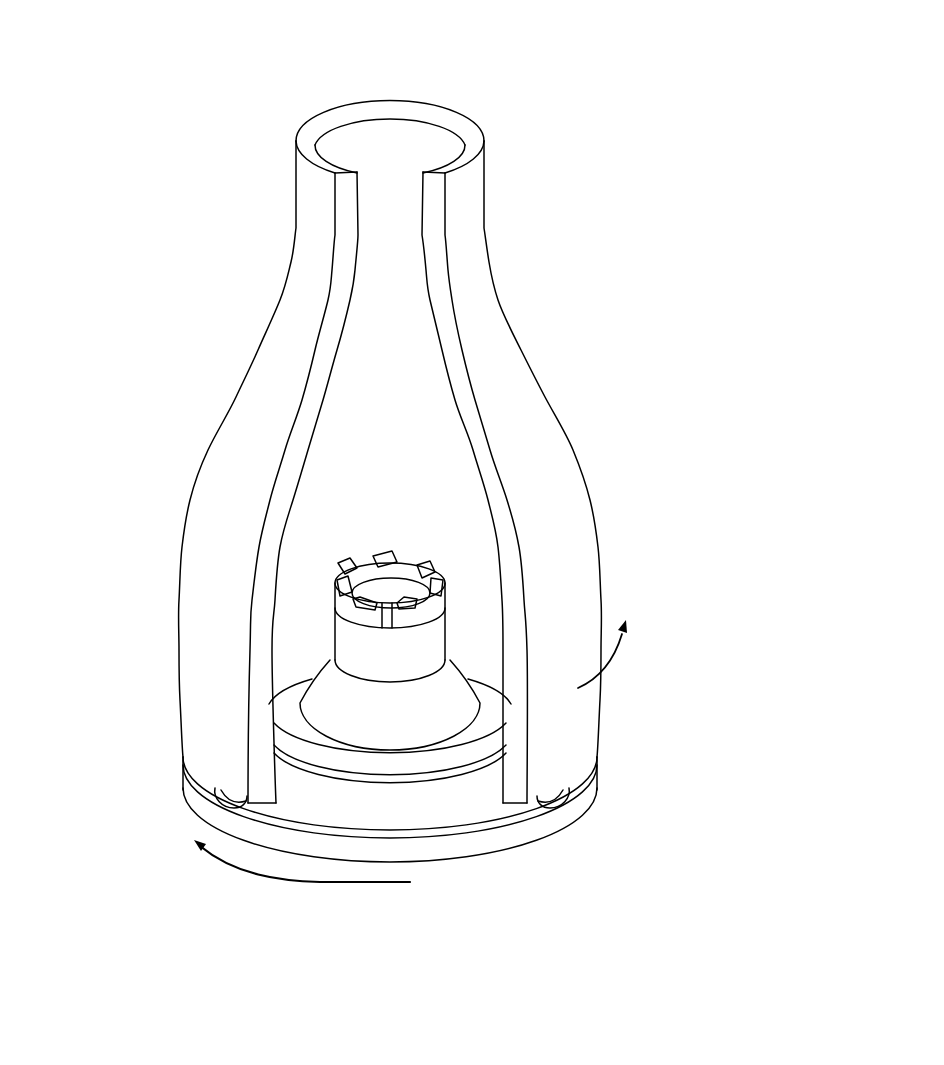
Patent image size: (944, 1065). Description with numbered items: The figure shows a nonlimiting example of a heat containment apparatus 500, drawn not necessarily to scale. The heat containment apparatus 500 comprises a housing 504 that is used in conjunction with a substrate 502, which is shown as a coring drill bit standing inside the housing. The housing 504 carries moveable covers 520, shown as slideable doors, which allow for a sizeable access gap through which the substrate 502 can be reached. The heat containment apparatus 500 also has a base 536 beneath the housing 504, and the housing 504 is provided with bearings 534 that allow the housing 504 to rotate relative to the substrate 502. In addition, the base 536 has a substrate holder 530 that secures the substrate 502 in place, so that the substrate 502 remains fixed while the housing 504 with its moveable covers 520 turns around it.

The heat containment apparatus 500 is at (157, 60).
The substrate 502 is at (348, 635).
The housing 504 is at (697, 142).
The moveable covers 520 is at (326, 348).
The substrate holder 530 is at (328, 689).
The bearings 534 is at (218, 792).
The base 536 is at (580, 806).